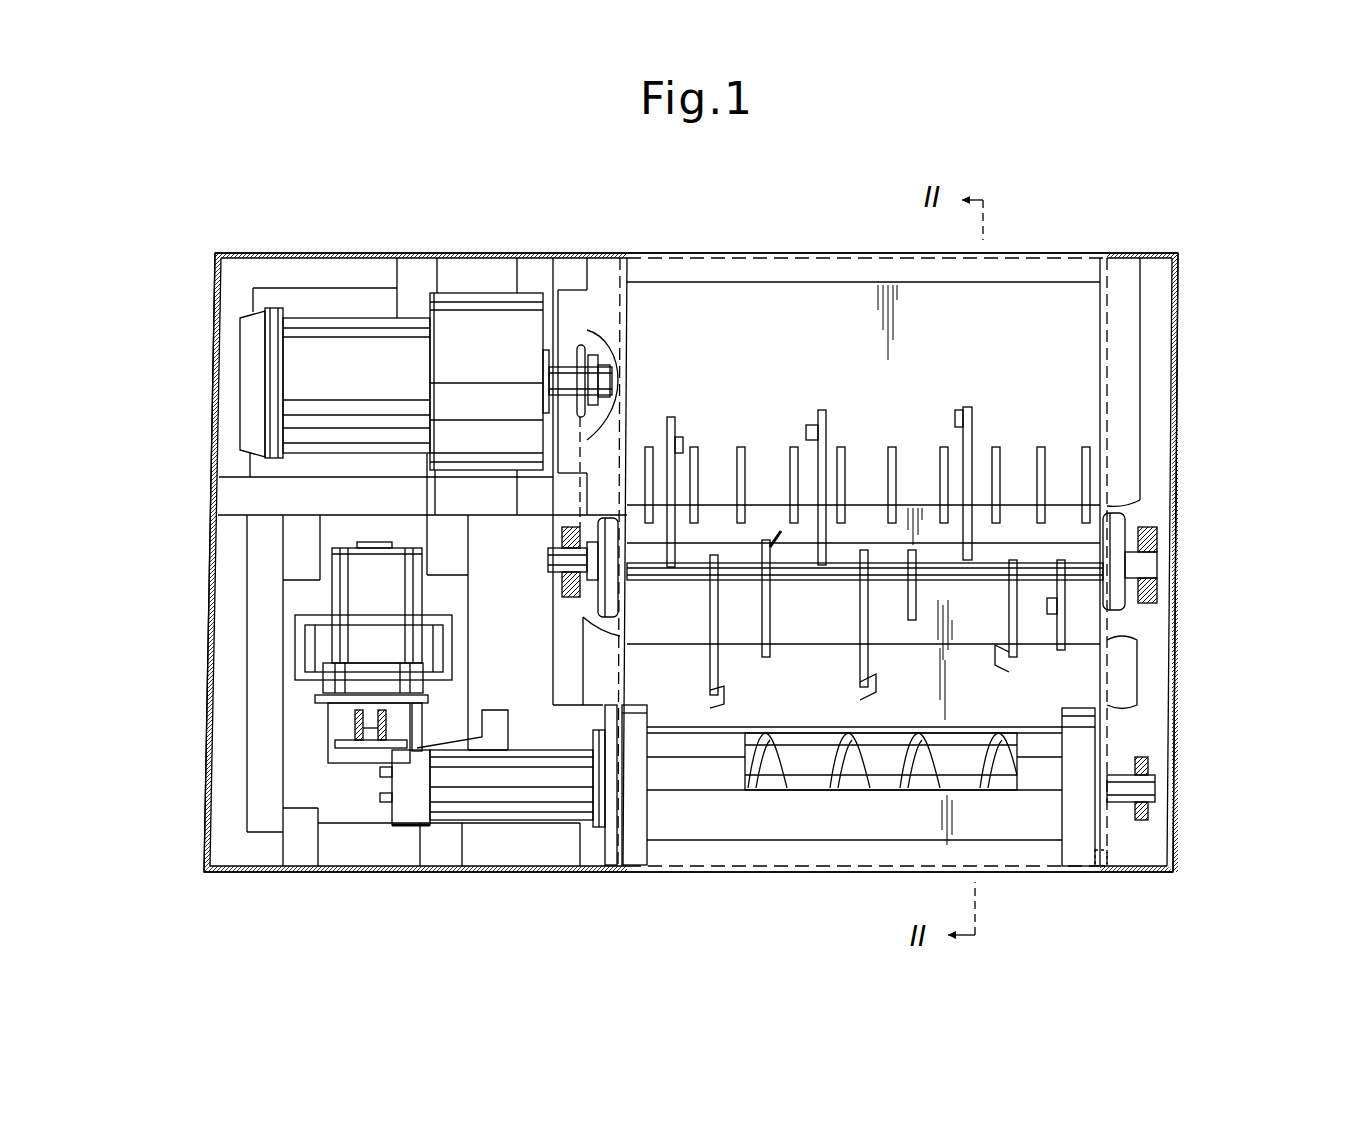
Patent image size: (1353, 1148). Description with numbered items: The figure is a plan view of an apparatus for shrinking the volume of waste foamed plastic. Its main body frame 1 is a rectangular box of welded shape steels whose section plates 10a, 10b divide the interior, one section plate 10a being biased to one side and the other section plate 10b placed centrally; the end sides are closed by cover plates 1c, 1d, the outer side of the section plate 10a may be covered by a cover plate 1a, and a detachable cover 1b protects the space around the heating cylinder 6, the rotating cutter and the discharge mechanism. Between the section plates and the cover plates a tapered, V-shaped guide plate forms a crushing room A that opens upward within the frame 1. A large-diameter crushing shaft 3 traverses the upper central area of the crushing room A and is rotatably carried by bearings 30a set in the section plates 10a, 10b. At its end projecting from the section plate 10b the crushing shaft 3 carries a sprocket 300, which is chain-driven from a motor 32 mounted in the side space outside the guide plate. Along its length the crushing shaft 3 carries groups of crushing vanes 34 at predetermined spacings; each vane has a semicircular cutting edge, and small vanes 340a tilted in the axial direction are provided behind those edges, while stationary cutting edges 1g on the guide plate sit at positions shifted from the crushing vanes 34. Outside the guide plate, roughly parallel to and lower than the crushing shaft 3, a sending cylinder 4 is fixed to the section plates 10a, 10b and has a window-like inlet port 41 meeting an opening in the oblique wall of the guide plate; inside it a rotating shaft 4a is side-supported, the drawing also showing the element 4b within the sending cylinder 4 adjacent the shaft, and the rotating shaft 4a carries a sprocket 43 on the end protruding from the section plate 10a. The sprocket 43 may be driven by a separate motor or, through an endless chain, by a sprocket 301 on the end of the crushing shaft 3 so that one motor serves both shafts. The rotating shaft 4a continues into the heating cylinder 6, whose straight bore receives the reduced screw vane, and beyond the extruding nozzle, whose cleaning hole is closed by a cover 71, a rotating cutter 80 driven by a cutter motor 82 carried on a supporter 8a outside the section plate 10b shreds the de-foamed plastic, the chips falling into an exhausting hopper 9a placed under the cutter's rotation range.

The main body frame 1 is at (1262, 270).
The cover plate 1a is at (1182, 379).
The detachable cover 1b is at (207, 467).
The cover plate 1c is at (790, 872).
The cover plate 1d is at (1037, 260).
The stationary cutting edges 1g is at (1047, 455).
The crushing shaft 3 is at (1043, 553).
The bearings 30a is at (1107, 520).
The sprocket 300 is at (560, 598).
The sprocket 301 is at (1153, 590).
The motor 32 is at (300, 380).
The crushing vanes 34 is at (846, 300).
The small vanes 340a is at (680, 440).
The sending cylinder 4 is at (722, 768).
The rotating shaft 4a is at (863, 790).
The conveyor trough 4b is at (913, 760).
The inlet port 41 is at (638, 868).
The sprocket 43 is at (1147, 823).
The heating cylinder 6 is at (512, 803).
The cover 71 is at (386, 780).
The rotating cutter 80 is at (335, 741).
The cutter motor 82 is at (347, 596).
The supporter 8a is at (293, 643).
The exhausting hopper 9a is at (337, 723).
The section plate 10a is at (1107, 344).
The section plate 10b is at (614, 260).
The crushing room A is at (920, 430).